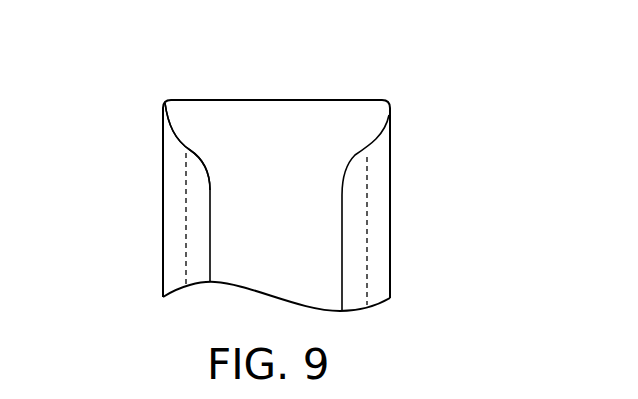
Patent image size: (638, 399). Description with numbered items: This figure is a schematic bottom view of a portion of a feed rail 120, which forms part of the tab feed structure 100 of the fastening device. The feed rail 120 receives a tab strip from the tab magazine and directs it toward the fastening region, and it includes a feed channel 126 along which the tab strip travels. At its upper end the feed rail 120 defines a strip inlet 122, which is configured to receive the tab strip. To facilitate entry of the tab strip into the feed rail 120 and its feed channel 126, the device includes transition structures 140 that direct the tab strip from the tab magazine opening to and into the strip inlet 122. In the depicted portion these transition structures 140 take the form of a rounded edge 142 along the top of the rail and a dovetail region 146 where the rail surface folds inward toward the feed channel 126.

The tab feed structure 100 is at (514, 88).
The feed rail 120 is at (161, 225).
The strip inlet 122 is at (345, 81).
The feed channel 126 is at (368, 215).
The transition structure 140 is at (140, 89).
The rounded edge 142 is at (205, 99).
The dovetail region 146 is at (183, 150).